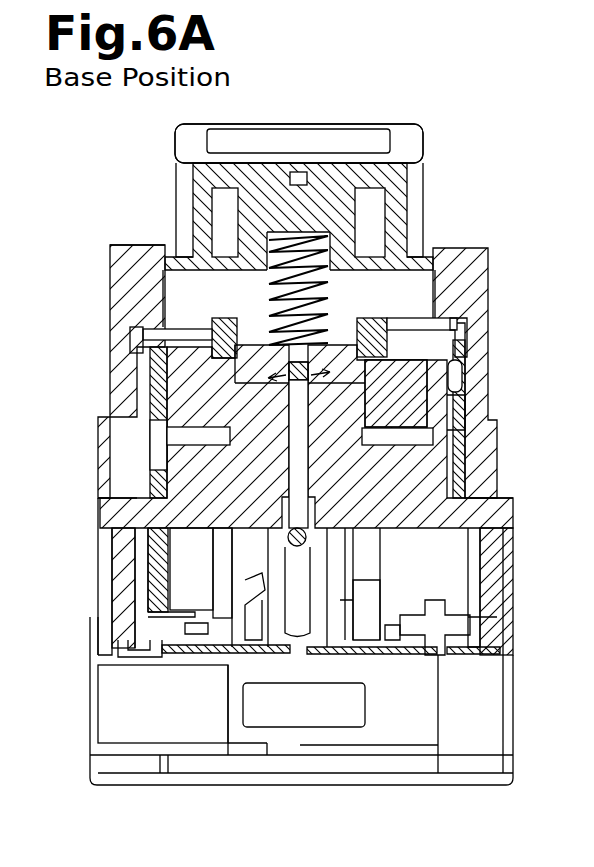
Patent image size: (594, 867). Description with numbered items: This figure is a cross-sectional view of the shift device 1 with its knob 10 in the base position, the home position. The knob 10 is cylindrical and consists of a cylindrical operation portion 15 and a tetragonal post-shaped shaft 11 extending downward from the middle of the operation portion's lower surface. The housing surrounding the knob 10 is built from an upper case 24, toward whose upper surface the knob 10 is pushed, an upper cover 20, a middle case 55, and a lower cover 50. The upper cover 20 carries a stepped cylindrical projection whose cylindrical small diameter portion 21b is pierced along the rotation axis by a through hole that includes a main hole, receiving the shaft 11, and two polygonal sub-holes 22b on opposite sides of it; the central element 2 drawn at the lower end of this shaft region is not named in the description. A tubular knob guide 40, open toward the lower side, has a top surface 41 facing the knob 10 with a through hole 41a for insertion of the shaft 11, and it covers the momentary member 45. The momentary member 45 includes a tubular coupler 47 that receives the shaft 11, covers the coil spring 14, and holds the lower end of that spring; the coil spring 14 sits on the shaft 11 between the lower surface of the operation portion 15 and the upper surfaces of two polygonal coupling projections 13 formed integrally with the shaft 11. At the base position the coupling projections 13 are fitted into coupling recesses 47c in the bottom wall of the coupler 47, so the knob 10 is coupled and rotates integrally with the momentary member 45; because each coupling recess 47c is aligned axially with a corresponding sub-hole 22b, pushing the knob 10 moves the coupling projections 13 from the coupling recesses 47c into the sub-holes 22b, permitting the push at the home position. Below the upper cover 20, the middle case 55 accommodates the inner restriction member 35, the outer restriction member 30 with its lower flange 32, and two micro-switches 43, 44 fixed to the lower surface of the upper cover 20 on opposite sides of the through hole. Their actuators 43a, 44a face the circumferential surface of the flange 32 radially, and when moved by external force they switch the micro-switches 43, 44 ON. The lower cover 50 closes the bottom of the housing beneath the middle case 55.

The shift device 1 is at (515, 92).
The stem 2 is at (302, 532).
The knob 10 is at (462, 123).
The shaft 11 is at (268, 293).
The coupling projections 13 is at (291, 421).
The coil spring 14 is at (296, 250).
The operation portion 15 is at (301, 130).
The upper cover 20 is at (570, 521).
The small diameter portion 21b is at (360, 398).
The sub-holes 22b is at (305, 430).
The upper case 24 is at (468, 248).
The outer restriction member 30 is at (240, 555).
The flange 32 is at (384, 624).
The inner restriction member 35 is at (280, 649).
The knob guide 40 is at (466, 398).
The top surface 41 is at (462, 335).
The through hole 41a is at (358, 322).
The micro-switch 43 is at (417, 653).
The actuator 43a is at (389, 640).
The micro-switch 44 is at (125, 645).
The actuator 44a is at (201, 637).
The momentary member 45 is at (462, 374).
The coupler 47 is at (228, 320).
The coupling recesses 47c is at (296, 358).
The lower cover 50 is at (570, 747).
The middle case 55 is at (570, 624).